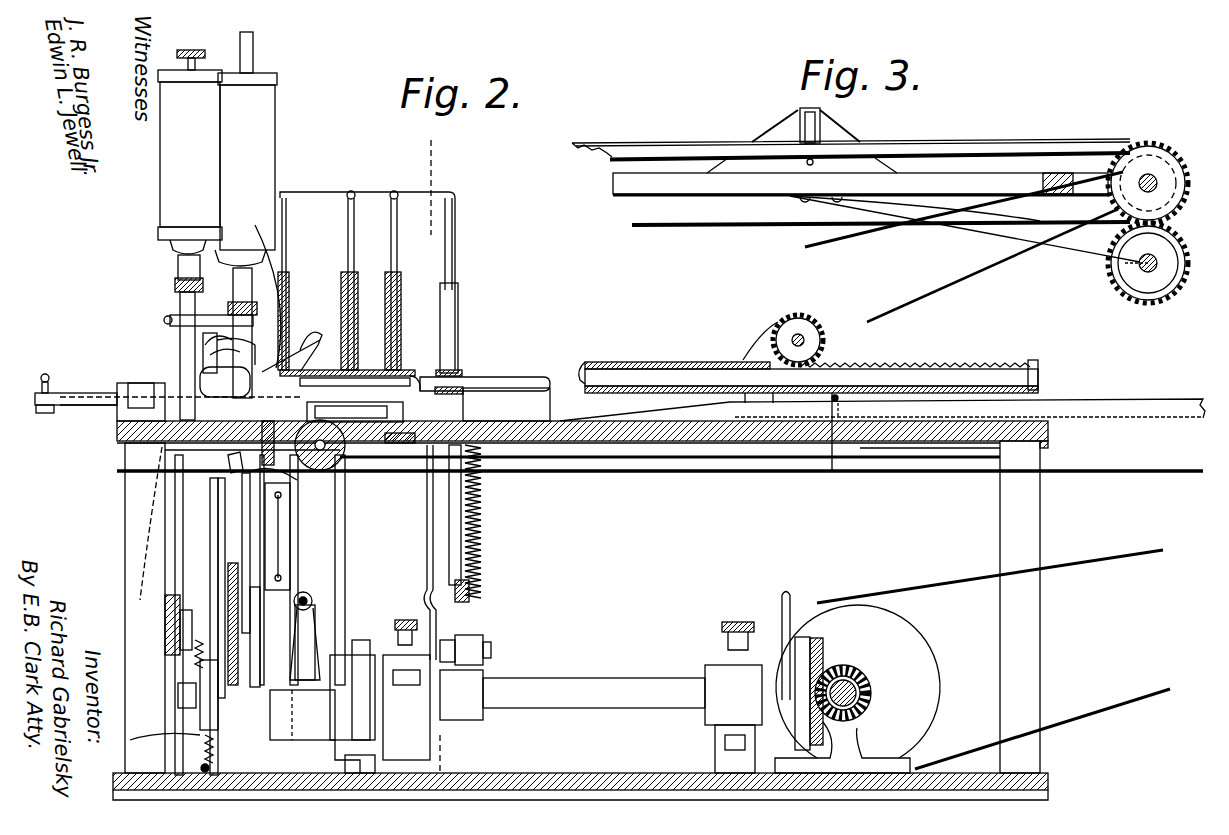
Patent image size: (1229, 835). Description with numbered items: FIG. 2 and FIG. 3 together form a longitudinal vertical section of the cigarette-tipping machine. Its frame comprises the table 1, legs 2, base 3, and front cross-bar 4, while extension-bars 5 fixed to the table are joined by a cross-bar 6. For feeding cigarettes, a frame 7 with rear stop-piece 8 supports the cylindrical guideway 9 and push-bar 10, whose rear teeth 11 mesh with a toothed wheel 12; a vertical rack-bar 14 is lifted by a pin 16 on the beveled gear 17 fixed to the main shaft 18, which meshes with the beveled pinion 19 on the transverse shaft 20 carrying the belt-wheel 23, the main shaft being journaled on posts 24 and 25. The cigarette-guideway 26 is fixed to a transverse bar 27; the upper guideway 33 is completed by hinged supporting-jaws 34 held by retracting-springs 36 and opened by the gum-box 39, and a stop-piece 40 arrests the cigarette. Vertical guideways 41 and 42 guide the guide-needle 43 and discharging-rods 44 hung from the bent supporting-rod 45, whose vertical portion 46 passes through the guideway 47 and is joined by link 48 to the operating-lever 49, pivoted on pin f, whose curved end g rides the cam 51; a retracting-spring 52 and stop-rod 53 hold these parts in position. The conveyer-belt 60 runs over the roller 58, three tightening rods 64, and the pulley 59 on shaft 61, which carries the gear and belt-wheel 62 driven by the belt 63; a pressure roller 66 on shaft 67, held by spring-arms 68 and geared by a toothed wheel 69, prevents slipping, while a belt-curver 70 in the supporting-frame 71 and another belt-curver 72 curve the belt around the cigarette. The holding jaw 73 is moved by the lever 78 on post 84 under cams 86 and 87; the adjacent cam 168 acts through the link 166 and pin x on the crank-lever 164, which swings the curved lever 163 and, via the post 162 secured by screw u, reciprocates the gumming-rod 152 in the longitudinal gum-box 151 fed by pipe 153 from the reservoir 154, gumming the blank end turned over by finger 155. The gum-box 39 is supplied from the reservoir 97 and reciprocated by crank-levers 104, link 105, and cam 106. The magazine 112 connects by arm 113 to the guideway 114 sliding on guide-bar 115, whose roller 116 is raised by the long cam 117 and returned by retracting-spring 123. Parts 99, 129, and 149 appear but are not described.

In FIG. 2, the table 1 is at (117, 432).
In FIG. 2, the posts or legs 2 is at (125, 540).
In FIG. 2, the base 3 is at (652, 772).
In FIG. 2, the cross-bar 4 is at (165, 610).
In FIG. 3, the extension-bars 5 is at (680, 195).
In FIG. 3, the cross-bar 6 is at (1056, 173).
In FIG. 2, the frame 7 is at (943, 362).
In FIG. 2, the stop-piece 8 is at (1050, 355).
In FIG. 2, the guideway 9 is at (686, 362).
In FIG. 2, the push-bar 10 is at (584, 362).
In FIG. 2, the teeth 11 is at (984, 365).
In FIG. 2, the toothed wheel 12 is at (818, 322).
In FIG. 2, the vertical rack-bar 14 is at (782, 592).
In FIG. 2, the pin 16 is at (860, 728).
In FIG. 2, the beveled driving-wheel 17 is at (820, 655).
In FIG. 2, the main shaft 18 is at (612, 678).
In FIG. 2, the beveled pinion 19 is at (858, 672).
In FIG. 2, the transverse shaft 20 is at (860, 694).
In FIG. 2, the toothed driving-gear or belt-wheel 23 is at (935, 650).
In FIG. 2, the post 24 is at (718, 665).
In FIG. 2, the post 25 is at (406, 690).
In FIG. 2, the cigarette-guideway 26 is at (518, 377).
In FIG. 2, the transverse bar 27 is at (466, 400).
In FIG. 2, the upper guideway 33 is at (362, 368).
In FIG. 2, the supporting-jaws 34 is at (408, 376).
In FIG. 2, the retracting-springs 36 is at (312, 332).
In FIG. 2, the gum-box 39 is at (258, 447).
In FIG. 2, the stop-piece 40 is at (275, 200).
In FIG. 2, the vertical guideway 41 is at (290, 280).
In FIG. 2, the vertical guideways 42 is at (400, 290).
In FIG. 2, the guide-needle 43 is at (287, 236).
In FIG. 2, the discharging-rods 44 is at (370, 245).
In FIG. 2, the bent supporting-rod 45 is at (367, 268).
In FIG. 2, the vertical portion of supporting-rod 46 is at (470, 585).
In FIG. 2, the guideway 47 is at (458, 325).
In FIG. 2, the link 48 is at (428, 602).
In FIG. 2, the operating-lever 49 is at (470, 635).
In FIG. 2, the operating-cam 51 is at (478, 722).
In FIG. 2, the retracting-spring 52 is at (470, 490).
In FIG. 2, the stop-rod 53 is at (426, 520).
In FIG. 2, the pulley or roller 58 is at (328, 470).
In FIG. 3, the roller or pulley 59 is at (1140, 160).
In FIG. 2, the conveyer-belt 60 is at (680, 430).
In FIG. 3, the conveyer-belt 60 is at (693, 234).
In FIG. 3, the transverse shaft 61 is at (1152, 174).
In FIG. 3, the toothed gear and belt-wheel 62 is at (1190, 162).
In FIG. 2, the driving-belt 63 is at (993, 659).
In FIG. 3, the driving-belt 63 is at (930, 268).
In FIG. 2, the small rollers or rods 64 is at (398, 445).
In FIG. 3, the friction and pressure roller 66 is at (1140, 282).
In FIG. 3, the transverse shaft 67 is at (1140, 268).
In FIG. 3, the spring-arms 68 is at (1100, 250).
In FIG. 3, the toothed wheel 69 is at (1158, 300).
In FIG. 3, the belt-curving device 70 is at (843, 133).
In FIG. 3, the supporting-frame 71 is at (790, 120).
In FIG. 2, the belt-curver 72 is at (835, 420).
In FIG. 2, the cigarette-holding jaw 73 is at (403, 410).
In FIG. 2, the operating-lever 78 is at (345, 532).
In FIG. 2, the post 84 is at (357, 757).
In FIG. 2, the cam 86 is at (360, 655).
In FIG. 2, the cam 87 is at (330, 738).
In FIG. 2, the elevated cylindrical reservoir 97 is at (270, 108).
In FIG. 2, the rod 99 is at (253, 58).
In FIG. 2, the crank-levers 104 is at (210, 510).
In FIG. 2, the link 105 is at (195, 662).
In FIG. 2, the cam 106 is at (200, 718).
In FIG. 2, the reciprocating magazine 112 is at (299, 540).
In FIG. 2, the downwardly-projecting arm 113 is at (246, 560).
In FIG. 2, the guideway 114 is at (227, 570).
In FIG. 2, the vertical guide-bar 115 is at (205, 745).
In FIG. 2, the roller 116 is at (180, 620).
In FIG. 2, the long cam 117 is at (250, 735).
In FIG. 2, the retracting-spring 123 is at (164, 749).
In FIG. 2, the arm 129 is at (315, 460).
In FIG. 2, the arm 149 is at (164, 320).
In FIG. 2, the longitudinal gum-box 151 is at (142, 383).
In FIG. 2, the reciprocating gumming-rod 152 is at (80, 393).
In FIG. 2, the gum-inlet pipe 153 is at (178, 270).
In FIG. 2, the supply-reservoir 154 is at (190, 152).
In FIG. 2, the finger 155 is at (160, 447).
In FIG. 2, the post 162 is at (38, 403).
In FIG. 2, the curved operating-lever 163 is at (88, 408).
In FIG. 2, the crank-lever 164 is at (305, 594).
In FIG. 2, the link 166 is at (323, 642).
In FIG. 2, the cam 168 is at (302, 714).
In FIG. 2, the screw u is at (44, 367).
In FIG. 2, the pin x is at (312, 598).
In FIG. 2, the pin f is at (492, 648).
In FIG. 2, the inner curved end g is at (178, 694).